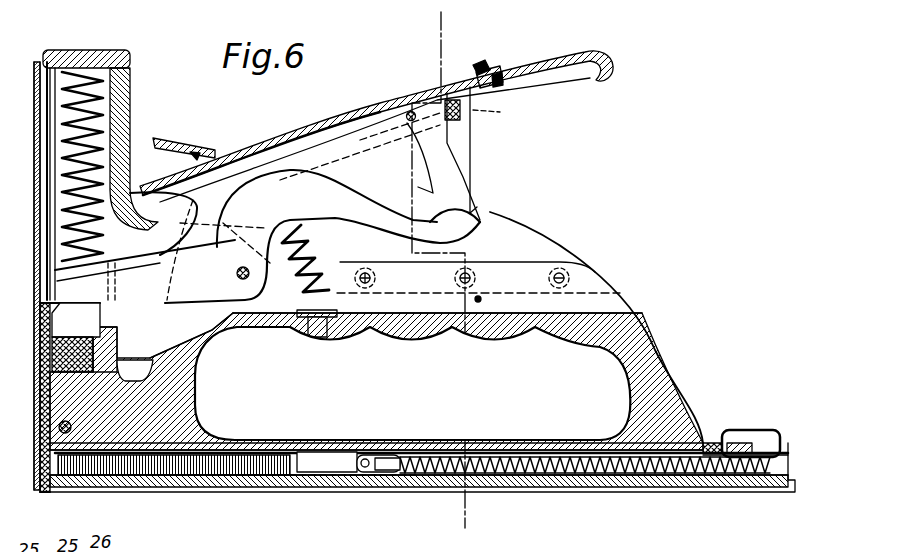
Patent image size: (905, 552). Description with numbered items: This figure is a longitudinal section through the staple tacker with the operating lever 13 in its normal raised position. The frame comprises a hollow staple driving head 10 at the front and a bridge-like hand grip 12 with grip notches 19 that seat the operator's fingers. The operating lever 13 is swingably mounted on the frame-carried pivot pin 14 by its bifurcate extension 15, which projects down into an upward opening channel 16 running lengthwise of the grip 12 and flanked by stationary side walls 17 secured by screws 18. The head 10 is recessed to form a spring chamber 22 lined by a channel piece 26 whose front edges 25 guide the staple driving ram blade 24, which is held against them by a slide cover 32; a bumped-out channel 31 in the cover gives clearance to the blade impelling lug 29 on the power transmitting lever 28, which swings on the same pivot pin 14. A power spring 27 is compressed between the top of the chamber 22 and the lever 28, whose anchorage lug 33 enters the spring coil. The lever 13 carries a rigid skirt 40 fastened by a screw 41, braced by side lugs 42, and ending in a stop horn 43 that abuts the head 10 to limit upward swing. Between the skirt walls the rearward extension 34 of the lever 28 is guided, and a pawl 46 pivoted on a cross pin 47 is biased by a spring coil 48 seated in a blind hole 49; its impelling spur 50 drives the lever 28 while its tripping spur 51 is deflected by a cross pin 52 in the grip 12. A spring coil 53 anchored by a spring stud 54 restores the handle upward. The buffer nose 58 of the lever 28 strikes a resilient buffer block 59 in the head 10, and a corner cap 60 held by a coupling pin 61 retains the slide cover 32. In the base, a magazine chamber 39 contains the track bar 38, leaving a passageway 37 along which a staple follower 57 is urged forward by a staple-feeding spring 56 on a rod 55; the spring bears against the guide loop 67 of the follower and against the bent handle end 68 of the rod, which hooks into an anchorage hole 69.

The staple driving head 10 is at (125, 100).
The hand grip 12 is at (605, 328).
The operating lever 13 is at (438, 30).
The pivot pin 14 is at (240, 280).
The bifurcate extension 15 is at (290, 180).
The channel 16 is at (613, 303).
The stationary side walls 17 is at (567, 252).
The screws 18 is at (567, 278).
The grip notches 19 is at (373, 326).
The spring chamber 22 is at (58, 80).
The staple driving ram blade 24 is at (48, 489).
The front edges of channel piece 25 is at (52, 90).
The channel piece 26 is at (115, 72).
The power spring 27 is at (90, 77).
The power transmitting lever 28 is at (166, 305).
The blade impelling lug 29 is at (100, 287).
The channel 31 is at (55, 65).
The slide cover 32 is at (40, 333).
The anchorage lug 33 is at (87, 258).
The rearward extension 34 is at (452, 238).
The passageway 37 is at (490, 453).
The staple guiding track bar 38 is at (57, 488).
The magazine chamber 39 is at (322, 463).
The skirt 40 is at (463, 137).
The screw 41 is at (483, 64).
The side lugs 42 is at (503, 78).
The stop horn 43 is at (150, 178).
The pawl 46 is at (448, 160).
The cross pin 47 is at (416, 120).
The spring coil 48 is at (450, 100).
The blind hole 49 is at (499, 114).
The impelling spur 50 is at (430, 195).
The tripping spur 51 is at (477, 207).
The cross pin 52 is at (482, 299).
The spring coil 53 is at (310, 243).
The spring stud 54 is at (317, 330).
The rod 55 is at (355, 453).
The staple-feeding spring 56 is at (563, 475).
The staple follower 57 is at (330, 457).
The buffer nose 58 is at (77, 313).
The buffer block 59 is at (117, 363).
The corner cap 60 is at (50, 473).
The coupling pin 61 is at (60, 427).
The guide loop 67 is at (377, 470).
The bent handle end 68 is at (766, 431).
The anchorage hole 69 is at (710, 441).